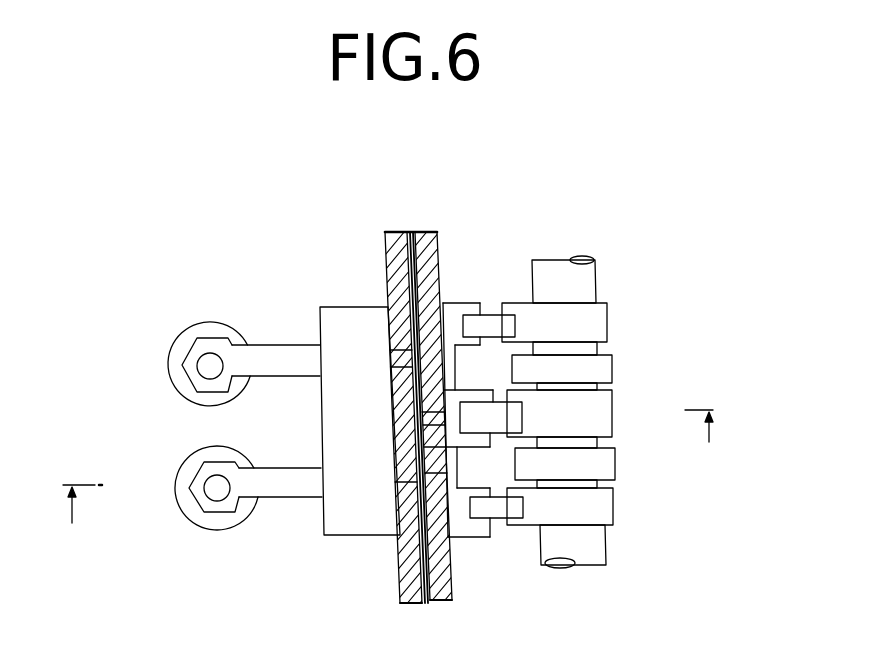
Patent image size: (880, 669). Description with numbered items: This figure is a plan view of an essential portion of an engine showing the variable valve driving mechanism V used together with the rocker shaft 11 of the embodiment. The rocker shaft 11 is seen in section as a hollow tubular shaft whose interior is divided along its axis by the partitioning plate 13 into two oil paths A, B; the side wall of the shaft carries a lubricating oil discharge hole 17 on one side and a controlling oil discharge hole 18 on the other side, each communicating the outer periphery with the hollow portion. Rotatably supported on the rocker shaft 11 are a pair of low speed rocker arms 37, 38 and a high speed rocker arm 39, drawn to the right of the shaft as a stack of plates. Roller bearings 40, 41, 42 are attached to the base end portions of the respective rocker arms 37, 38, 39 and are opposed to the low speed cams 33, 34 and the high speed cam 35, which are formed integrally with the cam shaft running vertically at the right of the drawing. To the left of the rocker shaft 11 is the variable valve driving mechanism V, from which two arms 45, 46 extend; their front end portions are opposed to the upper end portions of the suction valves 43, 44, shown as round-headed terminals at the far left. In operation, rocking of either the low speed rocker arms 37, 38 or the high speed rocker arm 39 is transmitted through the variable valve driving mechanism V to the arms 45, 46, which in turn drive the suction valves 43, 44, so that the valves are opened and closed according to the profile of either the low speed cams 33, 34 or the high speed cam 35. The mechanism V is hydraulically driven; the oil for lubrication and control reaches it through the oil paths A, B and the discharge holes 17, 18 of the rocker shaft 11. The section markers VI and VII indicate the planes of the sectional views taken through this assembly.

The rocker shaft 11 is at (431, 232).
The partitioning plate 13 is at (411, 232).
The lubricating oil discharge hole 17 is at (458, 530).
The controlling oil discharge hole 18 is at (391, 334).
The low speed cam 33 is at (612, 503).
The low speed cam 34 is at (600, 322).
The high speed cam 35 is at (612, 403).
The low speed rocker arm 37 is at (464, 530).
The low speed rocker arm 38 is at (453, 303).
The high speed rocker arm 39 is at (612, 366).
The roller bearing 40 is at (497, 520).
The roller bearing 41 is at (494, 314).
The roller bearing 42 is at (512, 420).
The suction valve 43 is at (176, 490).
The suction valve 44 is at (168, 364).
The arm 45 is at (270, 494).
The arm 46 is at (263, 352).
The oil path A is at (452, 303).
The oil path B is at (389, 249).
The variable valve driving mechanism V is at (316, 302).
The section line VI is at (85, 512).
The section line VII is at (700, 440).